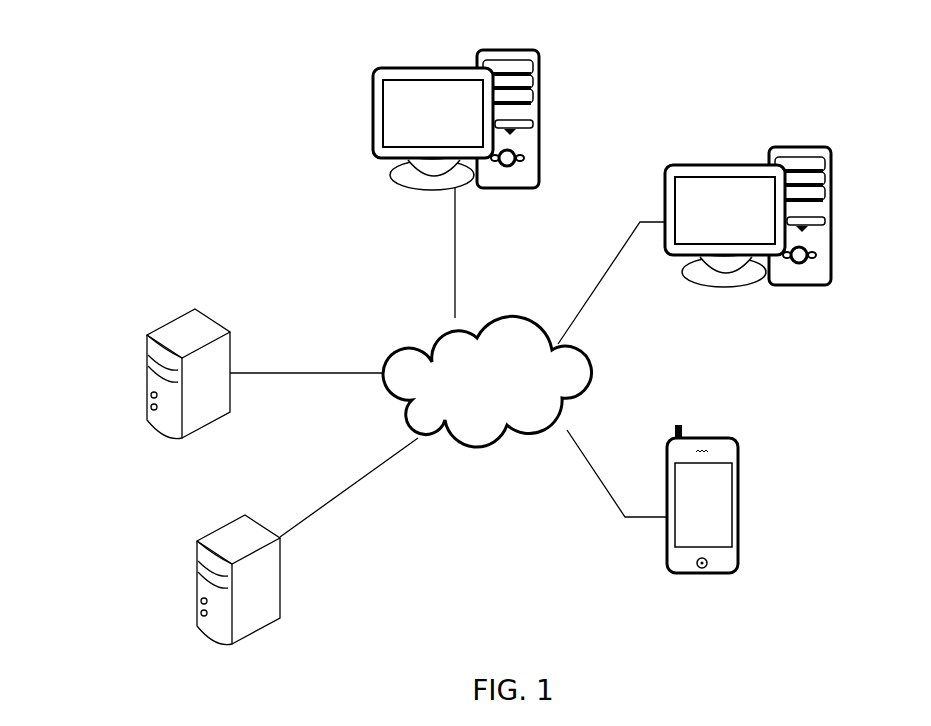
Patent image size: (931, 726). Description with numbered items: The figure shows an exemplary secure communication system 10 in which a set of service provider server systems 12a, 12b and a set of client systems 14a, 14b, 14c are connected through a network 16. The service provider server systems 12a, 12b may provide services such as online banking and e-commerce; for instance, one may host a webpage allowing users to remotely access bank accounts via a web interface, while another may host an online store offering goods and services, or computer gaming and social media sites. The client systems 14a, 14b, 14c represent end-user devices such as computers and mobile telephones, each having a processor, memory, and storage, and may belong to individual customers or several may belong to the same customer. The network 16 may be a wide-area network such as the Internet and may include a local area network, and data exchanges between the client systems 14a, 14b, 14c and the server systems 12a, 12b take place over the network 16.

The secure communication system 10 is at (252, 208).
The service provider server system 12a is at (147, 349).
The service provider server system 12b is at (197, 552).
The client system 14a is at (540, 52).
The client system 14b is at (830, 288).
The client system 14c is at (737, 574).
The network 16 is at (488, 450).